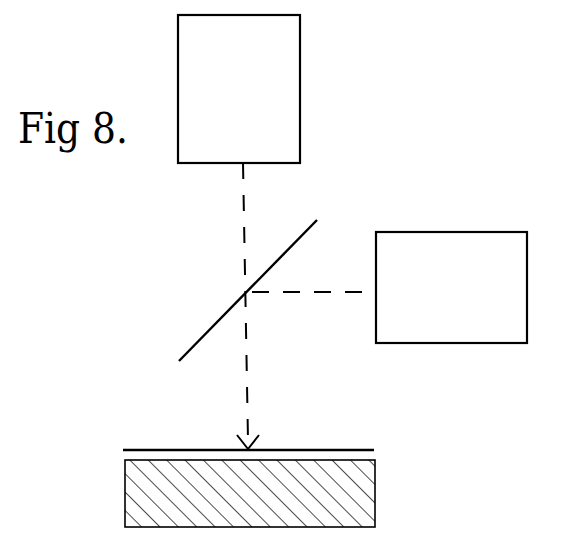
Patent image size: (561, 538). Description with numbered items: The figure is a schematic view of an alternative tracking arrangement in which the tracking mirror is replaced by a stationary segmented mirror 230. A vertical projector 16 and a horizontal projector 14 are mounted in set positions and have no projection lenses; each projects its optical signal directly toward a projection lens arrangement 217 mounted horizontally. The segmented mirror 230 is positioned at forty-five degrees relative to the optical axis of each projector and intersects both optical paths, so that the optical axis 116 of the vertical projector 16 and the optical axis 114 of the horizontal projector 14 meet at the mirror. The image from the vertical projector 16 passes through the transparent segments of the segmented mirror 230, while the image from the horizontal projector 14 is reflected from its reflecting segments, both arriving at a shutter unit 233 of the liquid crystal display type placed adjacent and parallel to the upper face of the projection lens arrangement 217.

The horizontal projector 14 is at (475, 247).
The vertical projector 16 is at (288, 108).
The optical axis of the horizontal projector 114 is at (322, 292).
The optical axis of the vertical projector 116 is at (245, 275).
The projection lens arrangement 217 is at (315, 463).
The stationary segmented mirror 230 is at (303, 257).
The shutter unit 233 is at (293, 448).